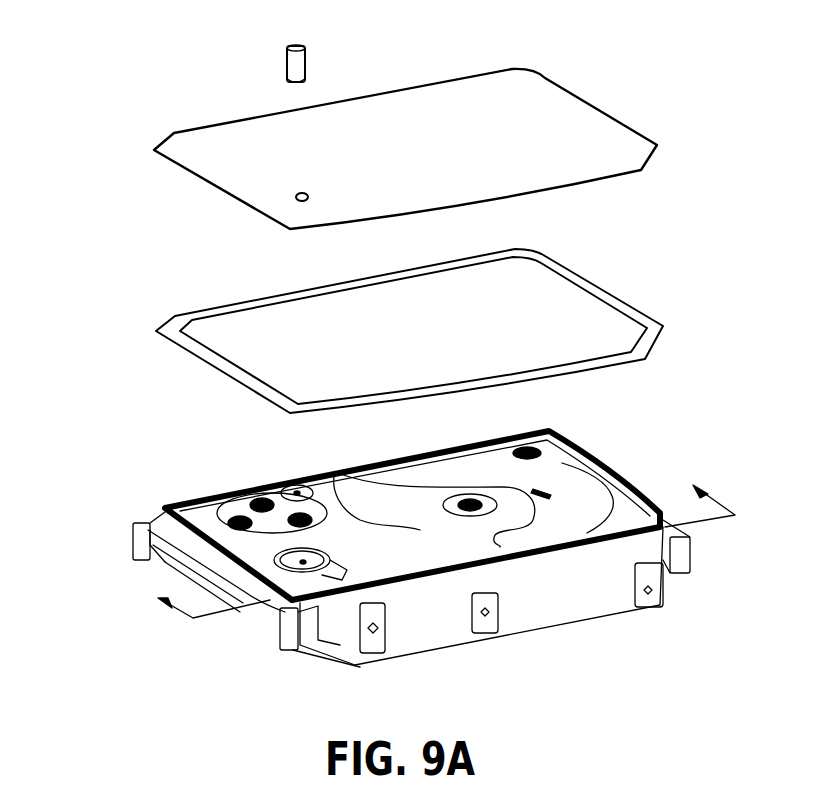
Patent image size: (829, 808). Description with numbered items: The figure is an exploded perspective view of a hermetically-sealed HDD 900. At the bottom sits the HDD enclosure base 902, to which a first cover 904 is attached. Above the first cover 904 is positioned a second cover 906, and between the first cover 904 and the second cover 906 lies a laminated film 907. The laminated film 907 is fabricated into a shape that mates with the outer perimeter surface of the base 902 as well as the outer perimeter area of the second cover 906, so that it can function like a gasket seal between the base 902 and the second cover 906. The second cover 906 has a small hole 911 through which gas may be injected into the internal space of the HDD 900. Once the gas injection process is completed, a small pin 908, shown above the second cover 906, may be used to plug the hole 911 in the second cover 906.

The hermetically-sealed HDD 900 is at (130, 192).
The HDD enclosure base 902 is at (610, 588).
The first cover 904 is at (620, 483).
The second cover 906 is at (592, 120).
The laminated film 907 is at (666, 327).
The small pin 908 is at (307, 67).
The small hole 911 is at (308, 195).